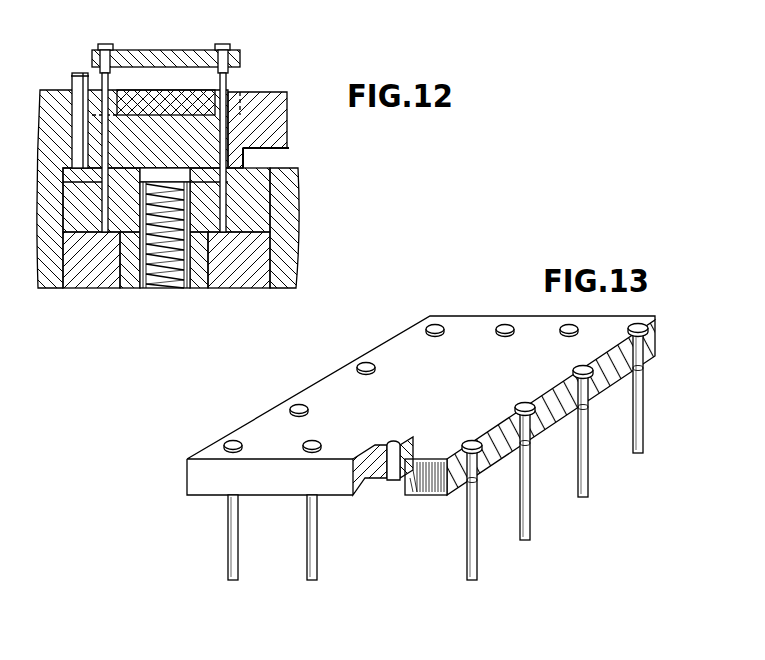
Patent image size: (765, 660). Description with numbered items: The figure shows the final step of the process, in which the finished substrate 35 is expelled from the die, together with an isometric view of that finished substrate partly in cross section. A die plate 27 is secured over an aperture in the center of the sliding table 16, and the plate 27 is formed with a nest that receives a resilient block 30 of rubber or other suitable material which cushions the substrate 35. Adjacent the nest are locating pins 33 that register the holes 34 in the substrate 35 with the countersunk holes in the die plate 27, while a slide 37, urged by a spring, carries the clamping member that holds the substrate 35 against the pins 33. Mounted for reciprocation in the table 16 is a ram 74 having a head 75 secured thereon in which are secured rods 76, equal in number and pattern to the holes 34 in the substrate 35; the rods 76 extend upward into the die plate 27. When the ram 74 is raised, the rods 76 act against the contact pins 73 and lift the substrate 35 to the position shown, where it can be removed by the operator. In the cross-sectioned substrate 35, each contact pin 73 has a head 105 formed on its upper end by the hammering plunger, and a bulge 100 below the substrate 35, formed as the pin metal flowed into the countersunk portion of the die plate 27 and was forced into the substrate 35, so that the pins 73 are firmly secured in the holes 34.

In FIG. 12, the table 16 is at (285, 240).
In FIG. 12, the die plate 27 is at (44, 138).
In FIG. 12, the resilient block 30 is at (148, 92).
In FIG. 12, the locating pins 33 is at (72, 75).
In FIG. 13, the holes 34 is at (395, 441).
In FIG. 12, the substrate 35 is at (166, 56).
In FIG. 13, the substrate 35 is at (257, 427).
In FIG. 12, the slide 37 is at (275, 120).
In FIG. 12, the contact pins 73 is at (229, 81).
In FIG. 13, the contact pins 73 is at (582, 452).
In FIG. 12, the ram 74 is at (252, 278).
In FIG. 12, the head 75 is at (258, 210).
In FIG. 12, the rods 76 is at (224, 178).
In FIG. 13, the bulge 100 is at (585, 405).
In FIG. 13, the head 105 is at (443, 334).